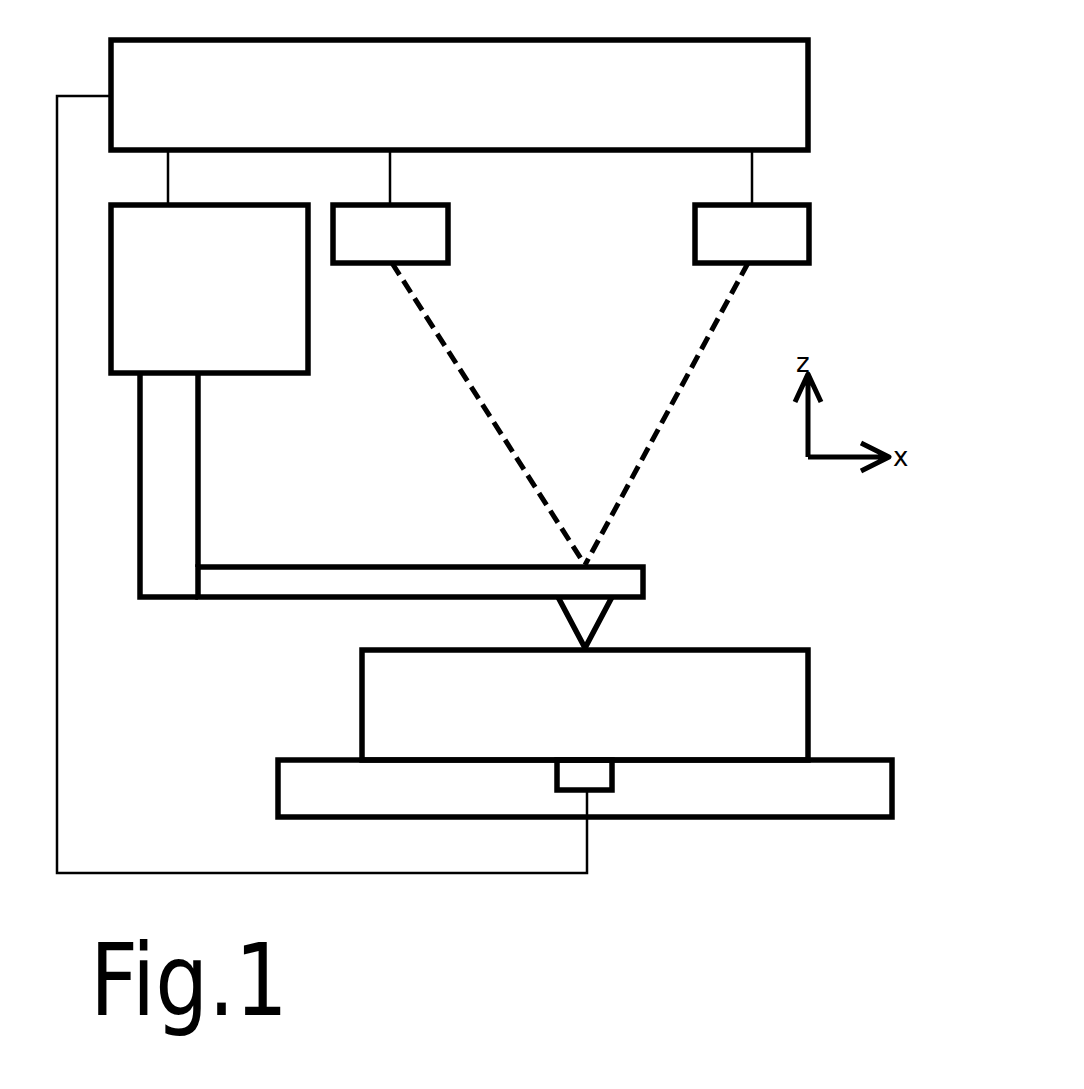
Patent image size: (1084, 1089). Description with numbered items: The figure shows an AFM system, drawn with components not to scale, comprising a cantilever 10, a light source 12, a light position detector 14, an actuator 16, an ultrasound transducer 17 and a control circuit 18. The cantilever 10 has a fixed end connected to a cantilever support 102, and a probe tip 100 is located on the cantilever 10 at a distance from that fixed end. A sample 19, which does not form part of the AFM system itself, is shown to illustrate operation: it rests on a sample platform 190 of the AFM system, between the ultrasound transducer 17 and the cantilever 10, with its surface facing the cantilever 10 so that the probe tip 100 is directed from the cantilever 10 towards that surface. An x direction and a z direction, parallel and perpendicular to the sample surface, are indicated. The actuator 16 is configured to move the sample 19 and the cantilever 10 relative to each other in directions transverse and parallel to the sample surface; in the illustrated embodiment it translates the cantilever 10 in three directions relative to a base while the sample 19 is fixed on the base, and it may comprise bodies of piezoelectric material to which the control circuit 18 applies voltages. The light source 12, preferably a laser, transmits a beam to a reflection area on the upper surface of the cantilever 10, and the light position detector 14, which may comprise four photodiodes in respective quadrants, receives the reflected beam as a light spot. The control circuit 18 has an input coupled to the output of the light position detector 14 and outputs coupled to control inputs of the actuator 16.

The control circuit 18 is at (808, 88).
The actuator 16 is at (308, 343).
The light position detector 14 is at (448, 230).
The light source 12 is at (809, 233).
The cantilever support 102 is at (198, 483).
The cantilever 10 is at (453, 565).
The probe tip 100 is at (585, 622).
The sample 19 is at (808, 672).
The sample platform 190 is at (278, 785).
The ultrasound transducer 17 is at (612, 790).